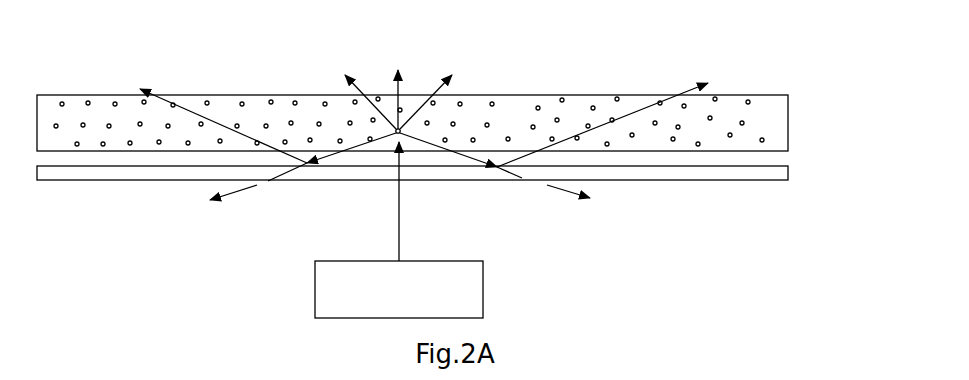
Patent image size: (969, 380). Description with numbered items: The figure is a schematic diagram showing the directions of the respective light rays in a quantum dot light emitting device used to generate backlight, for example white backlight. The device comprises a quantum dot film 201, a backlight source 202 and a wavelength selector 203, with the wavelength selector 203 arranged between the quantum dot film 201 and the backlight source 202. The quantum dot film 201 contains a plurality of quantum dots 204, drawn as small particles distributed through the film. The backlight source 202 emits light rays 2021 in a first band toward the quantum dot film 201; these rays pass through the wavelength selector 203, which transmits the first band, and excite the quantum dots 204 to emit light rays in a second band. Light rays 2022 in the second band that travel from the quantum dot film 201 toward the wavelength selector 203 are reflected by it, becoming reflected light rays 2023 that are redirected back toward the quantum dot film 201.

The quantum dot film 201 is at (788, 115).
The backlight source 202 is at (483, 284).
The wavelength selector 203 is at (788, 173).
The quantum dots 204 is at (748, 100).
The light rays in the first band 2021 is at (399, 214).
The light rays in the second band 2022 is at (430, 143).
The reflected light rays 2023 is at (153, 87).